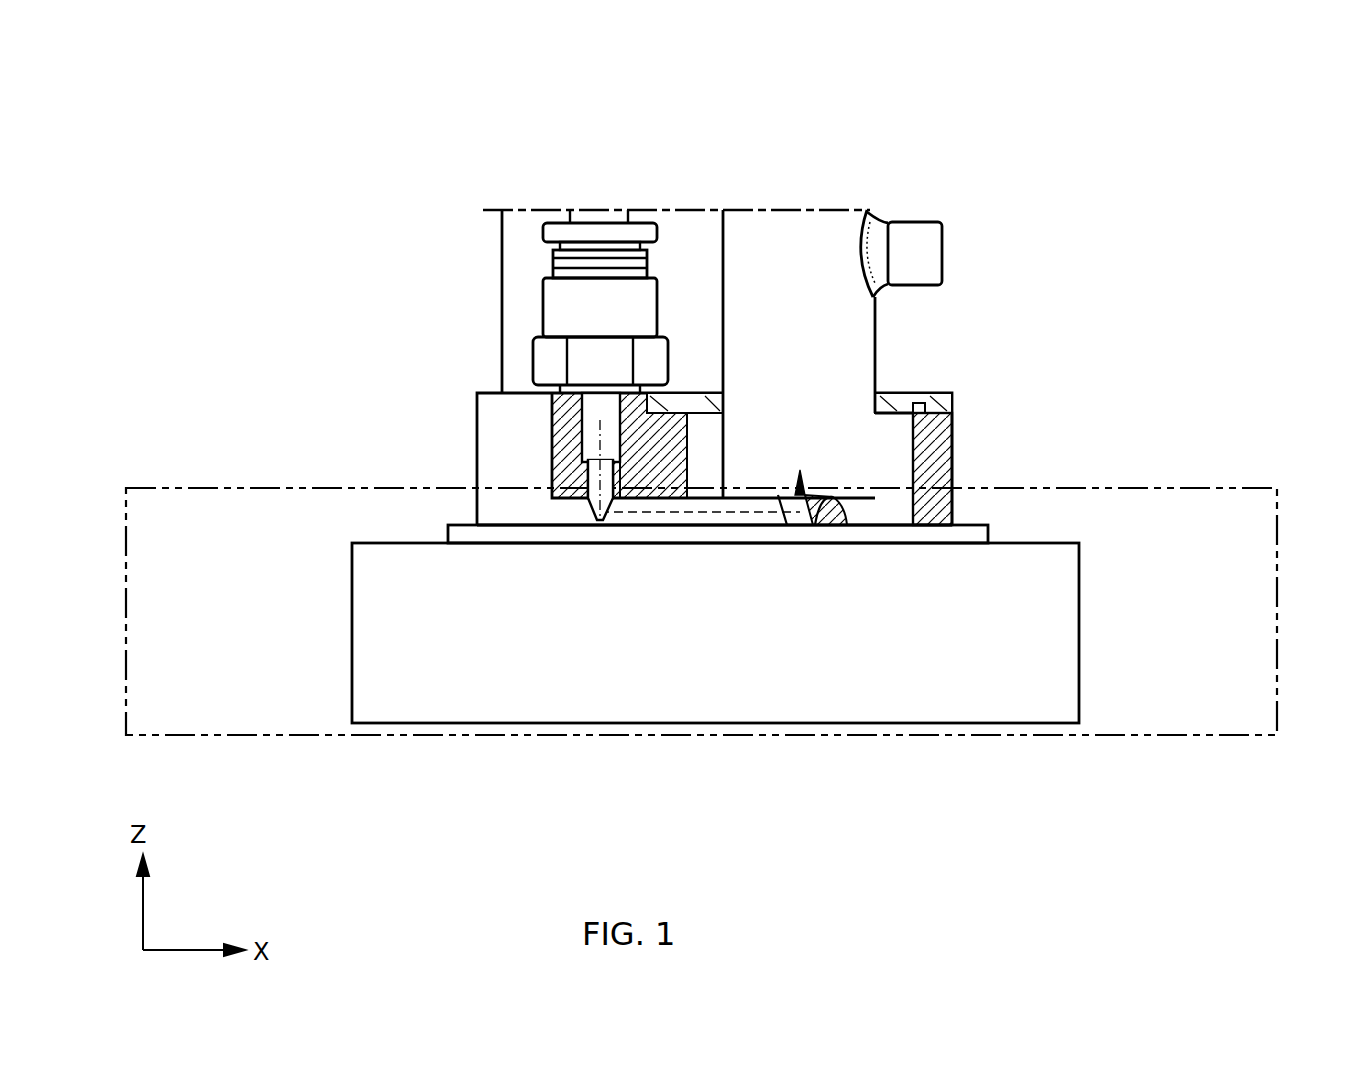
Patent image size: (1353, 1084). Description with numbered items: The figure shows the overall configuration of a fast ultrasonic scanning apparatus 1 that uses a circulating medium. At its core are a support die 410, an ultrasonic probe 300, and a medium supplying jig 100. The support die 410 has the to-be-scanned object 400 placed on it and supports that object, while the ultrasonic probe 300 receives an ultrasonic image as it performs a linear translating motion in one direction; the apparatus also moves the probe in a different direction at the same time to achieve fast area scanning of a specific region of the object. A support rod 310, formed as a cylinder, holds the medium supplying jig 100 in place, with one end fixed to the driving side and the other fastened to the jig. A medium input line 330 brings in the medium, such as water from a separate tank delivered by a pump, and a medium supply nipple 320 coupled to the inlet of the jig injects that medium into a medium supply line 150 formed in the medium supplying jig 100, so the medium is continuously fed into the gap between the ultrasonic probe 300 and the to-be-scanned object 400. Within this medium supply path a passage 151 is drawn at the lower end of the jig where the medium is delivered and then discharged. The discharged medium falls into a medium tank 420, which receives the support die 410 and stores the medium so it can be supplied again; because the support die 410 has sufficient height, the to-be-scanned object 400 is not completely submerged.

The fast ultrasonic scanning apparatus 1 is at (1062, 167).
The medium supplying jig 100 is at (502, 440).
The medium supply line 150 is at (588, 498).
The discharge channel 151 is at (720, 505).
The ultrasonic probe 300 is at (877, 348).
The support rod 310 is at (508, 327).
The medium supply nipple 320 is at (558, 290).
The medium input line 330 is at (600, 213).
The to-be-scanned object 400 is at (988, 527).
The support die 410 is at (908, 693).
The medium tank 420 is at (1160, 737).